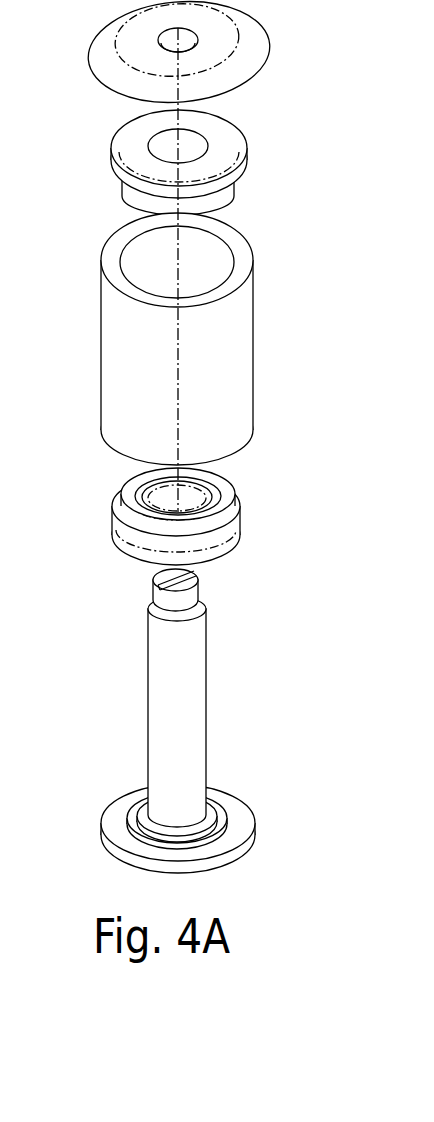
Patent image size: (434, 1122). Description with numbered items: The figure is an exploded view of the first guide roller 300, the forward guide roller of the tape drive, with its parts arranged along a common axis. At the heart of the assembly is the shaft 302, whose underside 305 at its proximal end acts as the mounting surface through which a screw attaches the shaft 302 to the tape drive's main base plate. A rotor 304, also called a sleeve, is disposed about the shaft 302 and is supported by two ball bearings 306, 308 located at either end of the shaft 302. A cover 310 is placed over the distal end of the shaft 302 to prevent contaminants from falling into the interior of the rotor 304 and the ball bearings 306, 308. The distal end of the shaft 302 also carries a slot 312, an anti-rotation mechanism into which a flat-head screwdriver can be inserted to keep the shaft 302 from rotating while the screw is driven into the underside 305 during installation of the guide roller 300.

The first guide roller 300 is at (207, 440).
The shaft 302 is at (198, 707).
The rotor 304 is at (252, 317).
The underside 305 is at (123, 837).
The ball bearing 306 is at (243, 142).
The ball bearing 308 is at (236, 512).
The cover 310 is at (262, 36).
The slot 312 is at (155, 575).